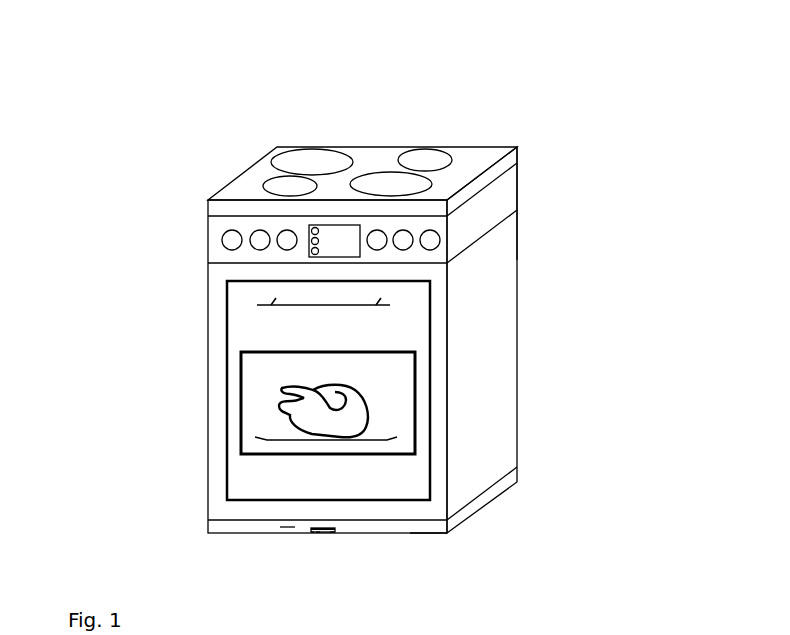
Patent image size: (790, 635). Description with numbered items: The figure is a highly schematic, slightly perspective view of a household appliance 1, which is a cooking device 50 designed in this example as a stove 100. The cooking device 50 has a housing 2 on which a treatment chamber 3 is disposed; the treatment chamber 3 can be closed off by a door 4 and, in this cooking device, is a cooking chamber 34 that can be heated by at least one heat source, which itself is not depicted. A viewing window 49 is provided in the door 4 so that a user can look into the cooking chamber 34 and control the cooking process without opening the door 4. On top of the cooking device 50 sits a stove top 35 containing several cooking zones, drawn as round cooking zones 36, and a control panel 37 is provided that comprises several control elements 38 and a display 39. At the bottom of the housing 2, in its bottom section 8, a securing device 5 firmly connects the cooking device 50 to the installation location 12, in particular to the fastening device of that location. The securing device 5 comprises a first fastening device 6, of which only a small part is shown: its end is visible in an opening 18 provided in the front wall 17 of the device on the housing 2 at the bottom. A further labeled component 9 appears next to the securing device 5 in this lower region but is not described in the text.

The household appliance 1 is at (329, 331).
The housing 2 is at (490, 262).
The treatment chamber 3 is at (260, 415).
The door 4 is at (408, 302).
The securing device 5 is at (330, 546).
The first fastening device 6 is at (318, 533).
The bottom section 8 is at (227, 529).
The camera 9 is at (313, 533).
The installation location 12 is at (432, 552).
The front wall 17 is at (287, 528).
The opening 18 is at (333, 533).
The cooking chamber 34 is at (398, 441).
The stove top 35 is at (356, 135).
The cooking zone 36 is at (403, 186).
The control panel 37 is at (208, 230).
The control elements 38 is at (415, 235).
The display 39 is at (308, 248).
The viewing window 49 is at (402, 408).
The cooking device 50 is at (592, 109).
The stove 100 is at (632, 119).